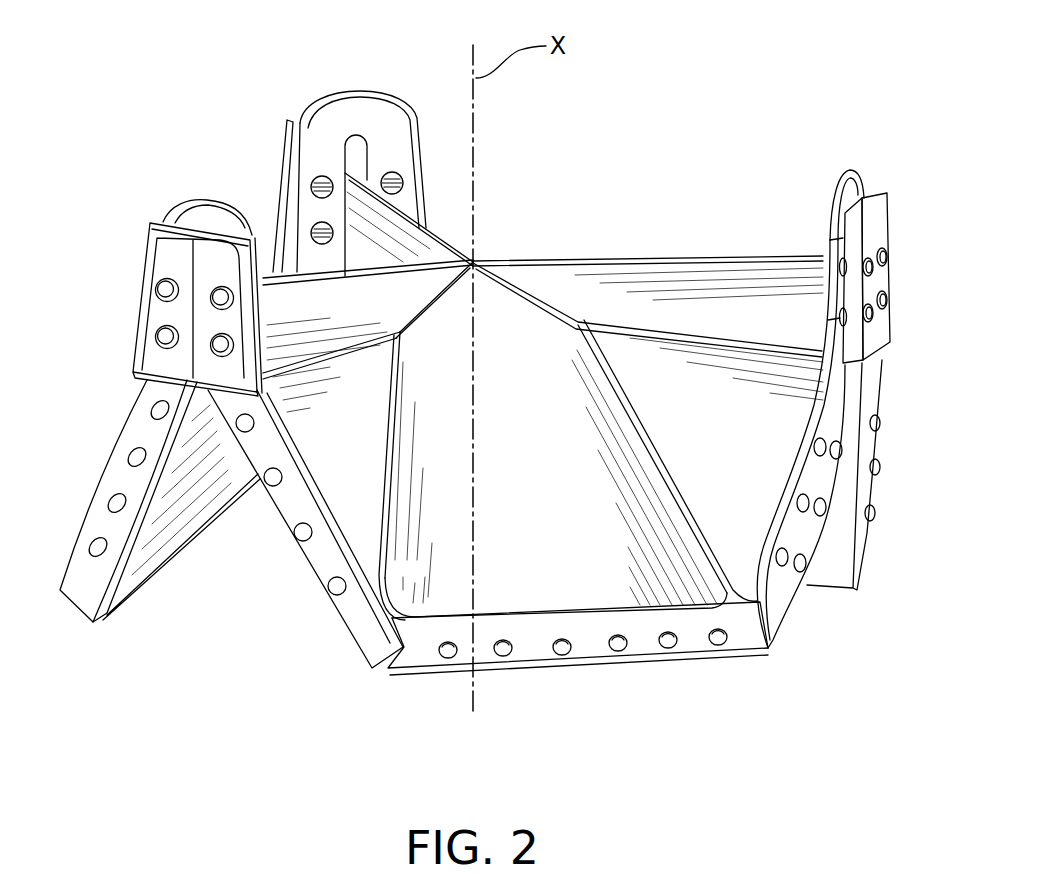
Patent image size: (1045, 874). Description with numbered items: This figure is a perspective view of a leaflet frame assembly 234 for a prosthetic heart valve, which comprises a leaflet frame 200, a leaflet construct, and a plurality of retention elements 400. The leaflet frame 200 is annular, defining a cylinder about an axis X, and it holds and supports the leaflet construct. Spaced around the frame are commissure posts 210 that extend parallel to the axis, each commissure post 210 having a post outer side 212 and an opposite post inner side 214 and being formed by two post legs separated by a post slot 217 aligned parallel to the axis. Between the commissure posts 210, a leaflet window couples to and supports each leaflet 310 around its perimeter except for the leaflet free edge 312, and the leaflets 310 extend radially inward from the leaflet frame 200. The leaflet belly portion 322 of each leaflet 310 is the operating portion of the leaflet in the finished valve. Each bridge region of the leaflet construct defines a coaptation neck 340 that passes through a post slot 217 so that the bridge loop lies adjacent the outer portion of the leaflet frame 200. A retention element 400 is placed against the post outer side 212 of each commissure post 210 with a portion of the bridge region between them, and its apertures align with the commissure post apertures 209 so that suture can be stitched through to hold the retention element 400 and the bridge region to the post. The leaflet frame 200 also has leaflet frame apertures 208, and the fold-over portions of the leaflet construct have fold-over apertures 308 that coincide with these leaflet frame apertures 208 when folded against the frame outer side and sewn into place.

The leaflet frame 200 is at (340, 503).
The leaflet frame apertures 208 is at (788, 560).
The commissure post apertures 209 is at (315, 178).
The commissure post 210 is at (203, 198).
The post outer side 212 is at (857, 183).
The post inner side 214 is at (364, 115).
The post slot 217 is at (367, 147).
The leaflet frame assembly 234 is at (675, 147).
The fold-over apertures 308 is at (625, 653).
The leaflet 310 is at (425, 557).
The leaflet free edge 312 is at (733, 262).
The leaflet belly portion 322 is at (532, 560).
The coaptation neck 340 is at (357, 203).
The retention element 400 is at (168, 252).